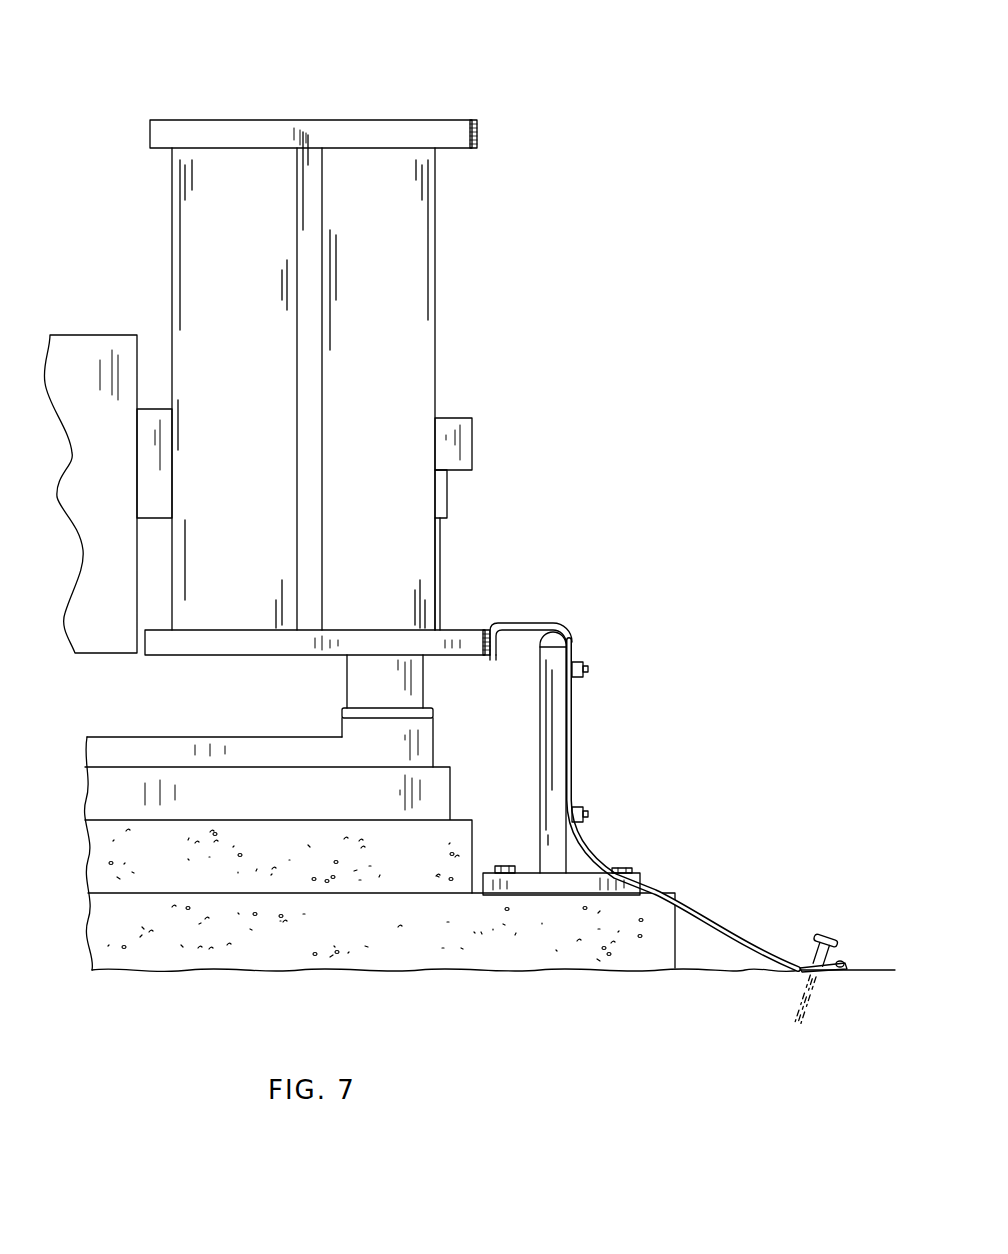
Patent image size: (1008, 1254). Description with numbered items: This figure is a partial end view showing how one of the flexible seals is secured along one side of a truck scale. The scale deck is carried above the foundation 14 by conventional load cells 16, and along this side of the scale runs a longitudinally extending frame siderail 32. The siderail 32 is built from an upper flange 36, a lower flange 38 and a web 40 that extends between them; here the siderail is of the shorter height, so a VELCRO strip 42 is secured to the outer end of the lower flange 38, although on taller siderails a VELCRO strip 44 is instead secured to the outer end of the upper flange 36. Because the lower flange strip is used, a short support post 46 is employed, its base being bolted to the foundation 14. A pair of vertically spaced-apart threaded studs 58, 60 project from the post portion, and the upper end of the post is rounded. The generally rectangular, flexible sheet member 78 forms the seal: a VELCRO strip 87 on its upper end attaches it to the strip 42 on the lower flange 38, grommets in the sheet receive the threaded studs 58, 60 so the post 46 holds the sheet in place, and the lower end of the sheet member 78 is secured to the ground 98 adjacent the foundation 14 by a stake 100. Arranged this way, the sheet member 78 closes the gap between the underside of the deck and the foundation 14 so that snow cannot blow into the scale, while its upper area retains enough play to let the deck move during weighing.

The foundation 14 is at (642, 918).
The load cell 16 is at (330, 674).
The frame siderail 32 is at (478, 244).
The upper flange 36 is at (386, 130).
The lower flange 38 is at (365, 643).
The web 40 is at (310, 392).
The VELCRO strip 42 is at (488, 628).
The VELCRO strip 44 is at (478, 135).
The short support post 46 is at (534, 734).
The threaded stud 58 is at (590, 815).
The threaded stud 60 is at (588, 671).
The sheet member 78 is at (616, 842).
The VELCRO strip 87 is at (491, 658).
The ground 98 is at (745, 975).
The stake 100 is at (822, 936).